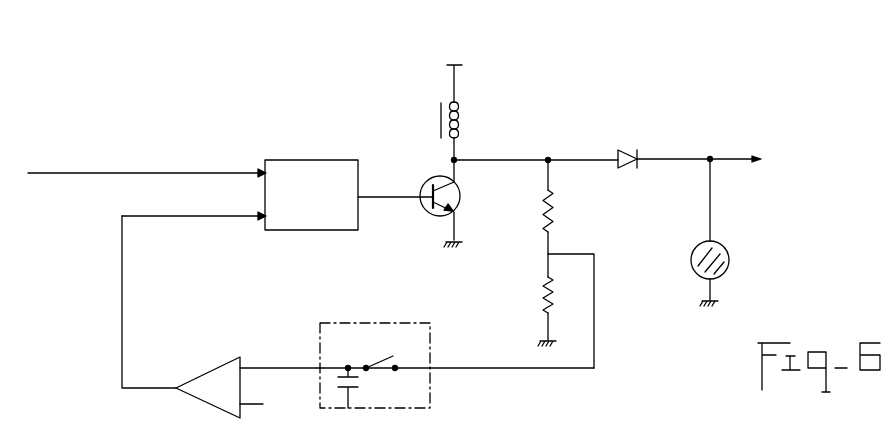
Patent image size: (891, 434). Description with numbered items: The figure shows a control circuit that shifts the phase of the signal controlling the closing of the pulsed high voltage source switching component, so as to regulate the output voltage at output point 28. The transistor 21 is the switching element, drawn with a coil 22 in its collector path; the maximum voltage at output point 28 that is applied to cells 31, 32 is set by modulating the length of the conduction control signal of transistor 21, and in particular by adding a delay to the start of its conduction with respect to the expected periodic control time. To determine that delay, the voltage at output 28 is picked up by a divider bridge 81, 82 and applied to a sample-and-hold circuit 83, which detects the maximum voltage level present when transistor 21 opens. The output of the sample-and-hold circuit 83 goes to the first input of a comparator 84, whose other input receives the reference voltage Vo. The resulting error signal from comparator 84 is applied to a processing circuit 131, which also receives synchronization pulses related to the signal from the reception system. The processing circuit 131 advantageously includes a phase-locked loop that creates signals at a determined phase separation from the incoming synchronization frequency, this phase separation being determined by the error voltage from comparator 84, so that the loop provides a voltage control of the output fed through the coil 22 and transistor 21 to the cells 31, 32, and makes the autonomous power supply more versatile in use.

The processing circuit 131 is at (312, 160).
The ignition coil 22 is at (455, 119).
The output point 28 is at (452, 160).
The transistor 21 is at (438, 216).
The divider bridge resistor 81 is at (552, 218).
The divider bridge resistor 82 is at (547, 302).
The cell 31 is at (750, 232).
The cell 32 is at (729, 262).
The sample-and-hold circuit 83 is at (312, 341).
The comparator 84 is at (210, 370).